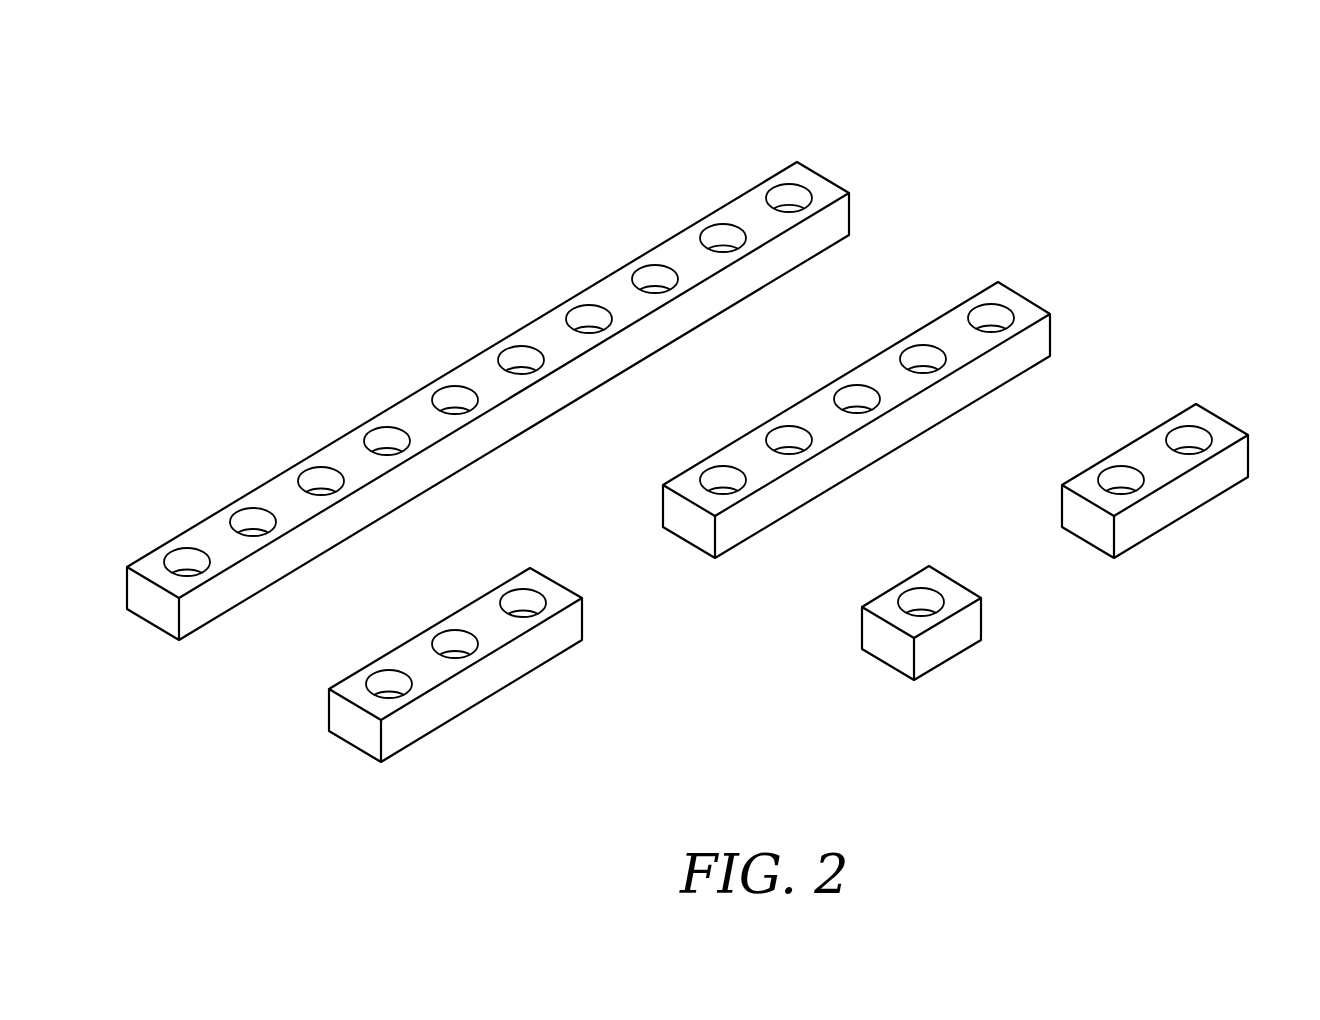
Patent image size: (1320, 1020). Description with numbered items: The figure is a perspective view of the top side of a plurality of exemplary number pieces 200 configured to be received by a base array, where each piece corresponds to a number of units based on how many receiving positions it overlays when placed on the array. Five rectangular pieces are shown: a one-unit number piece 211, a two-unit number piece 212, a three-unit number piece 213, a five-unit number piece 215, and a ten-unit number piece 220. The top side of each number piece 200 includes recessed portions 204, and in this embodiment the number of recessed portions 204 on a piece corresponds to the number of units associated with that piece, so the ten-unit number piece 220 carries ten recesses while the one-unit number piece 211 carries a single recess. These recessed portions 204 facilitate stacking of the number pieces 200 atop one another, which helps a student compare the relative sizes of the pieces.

The number pieces 200 is at (370, 113).
The recessed portions 204 is at (522, 361).
The 1-unit number piece 211 is at (928, 582).
The 2-unit number piece 212 is at (1196, 418).
The 3-unit number piece 213 is at (528, 582).
The 5-unit number piece 215 is at (997, 297).
The 10-unit number piece 220 is at (797, 175).